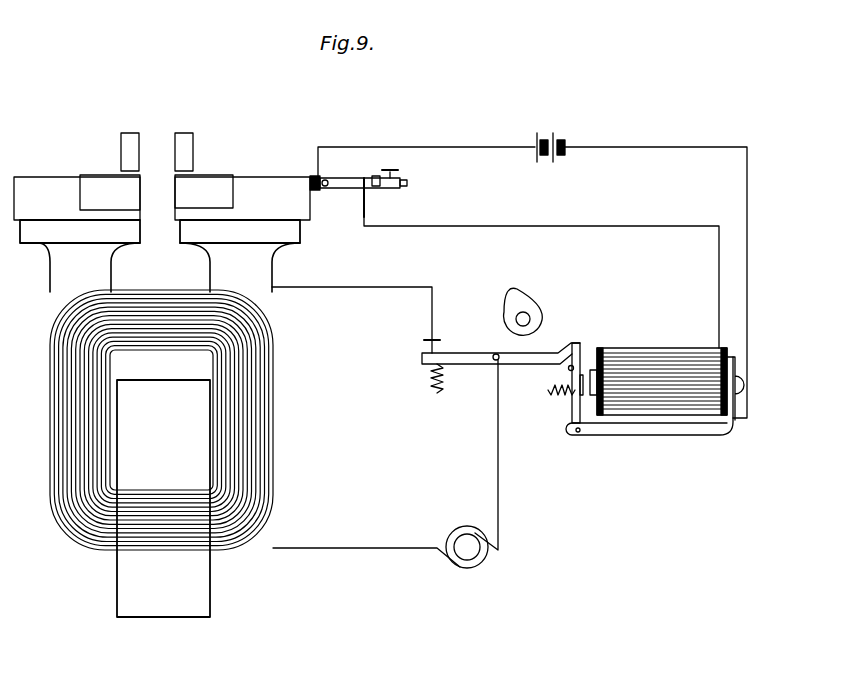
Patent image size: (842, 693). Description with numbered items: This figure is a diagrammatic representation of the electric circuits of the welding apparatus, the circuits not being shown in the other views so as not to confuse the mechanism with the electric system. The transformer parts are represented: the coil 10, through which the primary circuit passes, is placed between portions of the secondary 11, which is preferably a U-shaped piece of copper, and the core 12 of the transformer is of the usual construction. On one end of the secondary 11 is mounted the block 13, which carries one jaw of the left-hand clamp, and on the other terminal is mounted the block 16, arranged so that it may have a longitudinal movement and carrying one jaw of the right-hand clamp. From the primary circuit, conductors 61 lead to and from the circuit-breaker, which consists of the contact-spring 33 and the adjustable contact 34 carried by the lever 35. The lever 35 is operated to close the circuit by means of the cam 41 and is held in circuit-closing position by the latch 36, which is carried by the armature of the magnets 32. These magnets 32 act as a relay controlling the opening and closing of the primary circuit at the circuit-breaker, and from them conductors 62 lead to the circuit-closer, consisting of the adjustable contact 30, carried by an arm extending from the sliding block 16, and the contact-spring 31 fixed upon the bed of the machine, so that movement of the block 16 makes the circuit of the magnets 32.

The coil 10 is at (146, 293).
The secondary 11 is at (50, 289).
The core 12 is at (118, 591).
The block 13 is at (45, 183).
The block 16 is at (250, 180).
The adjustable contact 30 is at (372, 160).
The contact-spring 31 is at (346, 200).
The magnets 32 is at (655, 340).
The contact-spring 33 is at (436, 338).
The adjustable contact 34 is at (420, 360).
The lever 35 is at (508, 352).
The latch 36 is at (570, 343).
The cam 41 is at (530, 302).
The conductors 61 is at (385, 417).
The conductors 62 is at (532, 272).